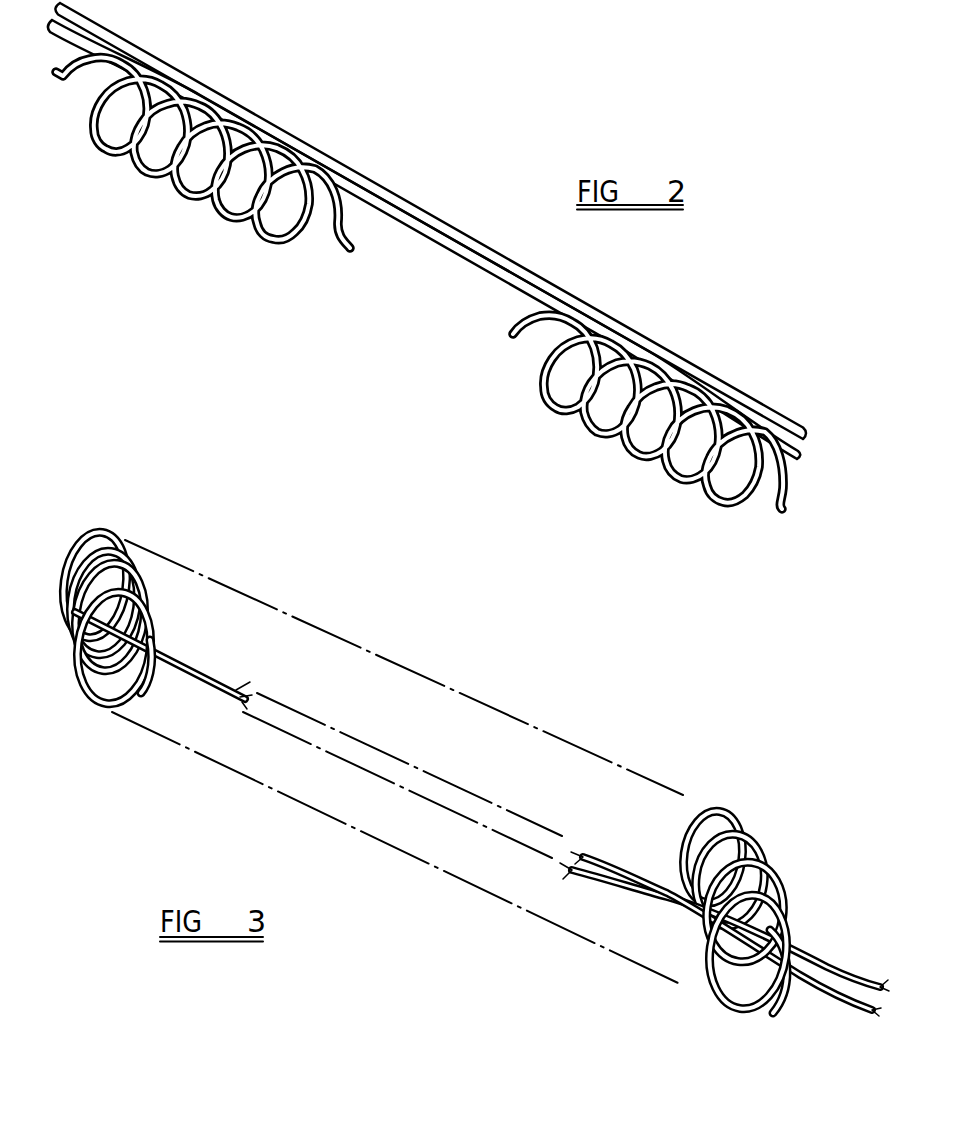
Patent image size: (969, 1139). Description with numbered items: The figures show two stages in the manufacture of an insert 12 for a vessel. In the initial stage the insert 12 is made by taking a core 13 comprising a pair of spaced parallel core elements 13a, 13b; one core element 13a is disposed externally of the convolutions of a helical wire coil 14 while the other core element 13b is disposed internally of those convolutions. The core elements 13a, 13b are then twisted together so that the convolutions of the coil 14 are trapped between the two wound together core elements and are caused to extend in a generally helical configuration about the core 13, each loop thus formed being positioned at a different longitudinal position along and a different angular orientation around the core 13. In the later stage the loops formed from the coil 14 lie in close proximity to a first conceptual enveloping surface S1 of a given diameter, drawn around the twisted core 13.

In FIG. 2, the insert 12 is at (462, 258).
In FIG. 2, the core 13 is at (462, 258).
In FIG. 2, the core element 13a is at (813, 447).
In FIG. 2, the core element 13b is at (800, 456).
In FIG. 2, the helical wire coil 14 is at (623, 447).
In FIG. 3, the helical wire coil 14 is at (782, 907).
In FIG. 3, the first conceptual enveloping surface S1 is at (372, 656).